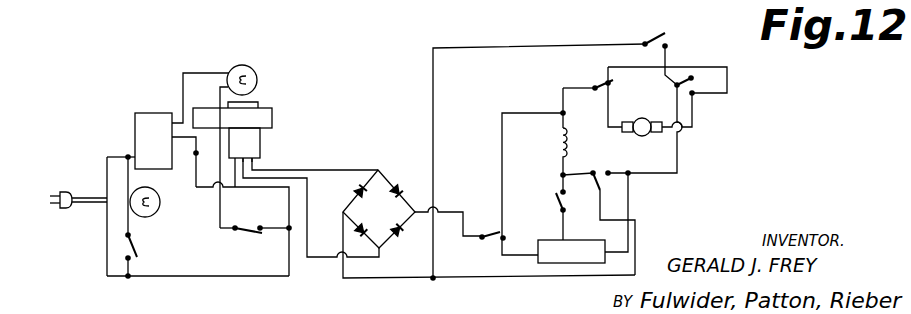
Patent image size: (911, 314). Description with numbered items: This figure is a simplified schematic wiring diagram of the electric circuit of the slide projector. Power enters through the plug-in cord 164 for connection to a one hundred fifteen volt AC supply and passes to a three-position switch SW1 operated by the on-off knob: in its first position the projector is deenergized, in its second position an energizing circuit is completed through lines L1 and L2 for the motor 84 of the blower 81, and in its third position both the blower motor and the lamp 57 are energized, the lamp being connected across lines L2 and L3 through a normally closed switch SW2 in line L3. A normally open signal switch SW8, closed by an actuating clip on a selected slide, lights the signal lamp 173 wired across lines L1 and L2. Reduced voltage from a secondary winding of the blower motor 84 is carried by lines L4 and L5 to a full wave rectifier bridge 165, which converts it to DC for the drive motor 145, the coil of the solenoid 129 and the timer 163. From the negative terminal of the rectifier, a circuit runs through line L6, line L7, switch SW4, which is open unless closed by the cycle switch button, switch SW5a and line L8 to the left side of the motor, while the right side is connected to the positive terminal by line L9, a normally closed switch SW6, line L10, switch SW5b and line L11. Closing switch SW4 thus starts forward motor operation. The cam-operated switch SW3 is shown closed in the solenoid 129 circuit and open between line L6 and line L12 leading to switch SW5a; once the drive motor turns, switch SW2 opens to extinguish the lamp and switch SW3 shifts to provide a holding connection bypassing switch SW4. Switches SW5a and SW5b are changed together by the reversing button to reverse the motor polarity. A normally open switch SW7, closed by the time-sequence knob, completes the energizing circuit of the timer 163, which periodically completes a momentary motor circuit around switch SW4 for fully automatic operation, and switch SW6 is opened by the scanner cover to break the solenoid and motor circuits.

The plug-in cord 164 is at (80, 208).
The signal lamp 173 is at (166, 184).
The signal switch SW8 is at (138, 245).
The line L2 is at (155, 278).
The three-position switch SW1 is at (147, 128).
The line L1 is at (200, 187).
The line L3 is at (203, 73).
The lamp 57 is at (255, 75).
The blower 81 is at (278, 102).
The blower motor 84 is at (262, 156).
The normally closed switch SW2 is at (243, 237).
The line L4 is at (318, 169).
The line L5 is at (312, 195).
The full wave rectifier bridge 165 is at (405, 158).
The line L6 is at (380, 282).
The line L7 is at (510, 47).
The line L9 is at (452, 210).
The normally closed switch SW6 is at (483, 243).
The line L10 is at (500, 150).
The timer 163 is at (553, 265).
The normally open switch SW7 is at (556, 209).
The solenoid 129 is at (570, 152).
The switch SW3 is at (612, 157).
The drive motor 145 is at (643, 133).
The line L8 is at (621, 98).
The line L12 is at (678, 157).
The line L11 is at (683, 65).
The switch SW4 is at (653, 33).
The reversing switch SW5a is at (693, 78).
The reversing switch SW5b is at (597, 85).